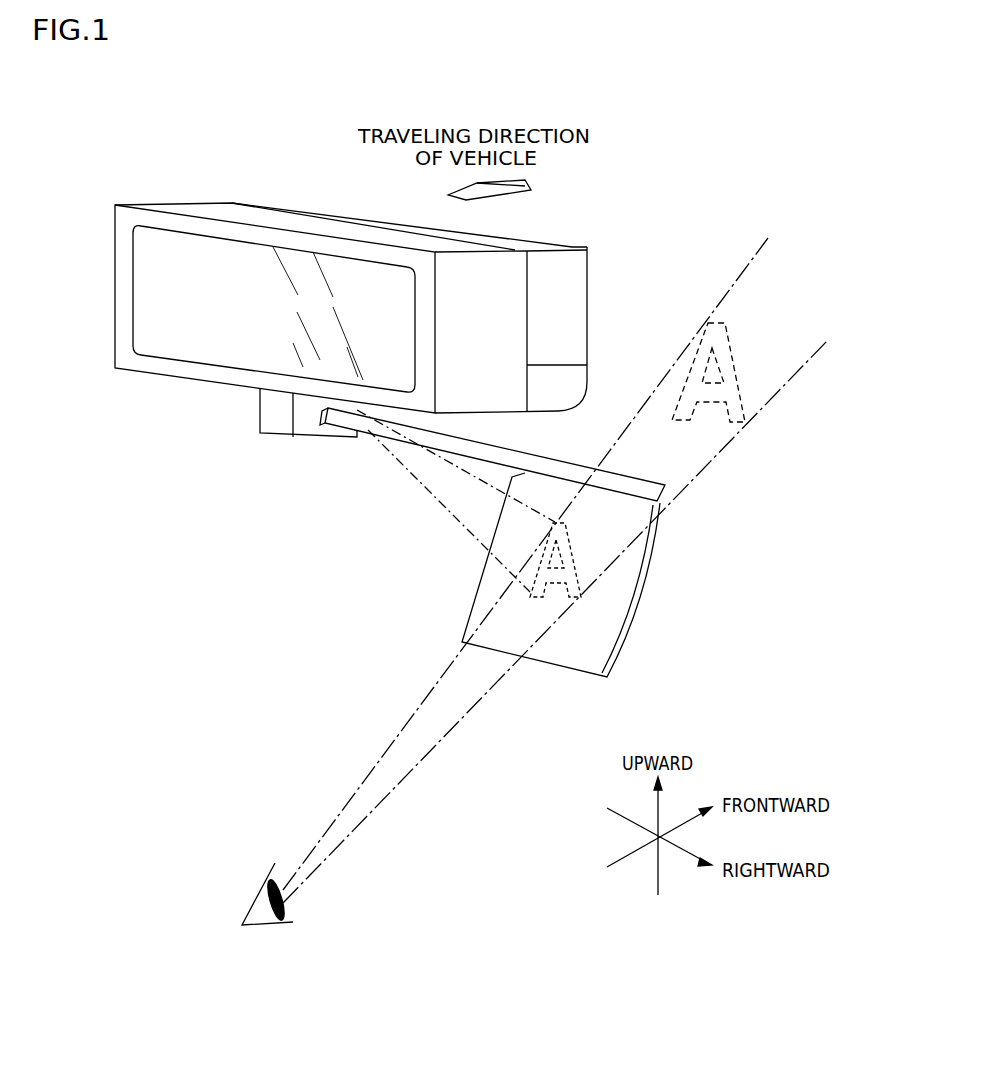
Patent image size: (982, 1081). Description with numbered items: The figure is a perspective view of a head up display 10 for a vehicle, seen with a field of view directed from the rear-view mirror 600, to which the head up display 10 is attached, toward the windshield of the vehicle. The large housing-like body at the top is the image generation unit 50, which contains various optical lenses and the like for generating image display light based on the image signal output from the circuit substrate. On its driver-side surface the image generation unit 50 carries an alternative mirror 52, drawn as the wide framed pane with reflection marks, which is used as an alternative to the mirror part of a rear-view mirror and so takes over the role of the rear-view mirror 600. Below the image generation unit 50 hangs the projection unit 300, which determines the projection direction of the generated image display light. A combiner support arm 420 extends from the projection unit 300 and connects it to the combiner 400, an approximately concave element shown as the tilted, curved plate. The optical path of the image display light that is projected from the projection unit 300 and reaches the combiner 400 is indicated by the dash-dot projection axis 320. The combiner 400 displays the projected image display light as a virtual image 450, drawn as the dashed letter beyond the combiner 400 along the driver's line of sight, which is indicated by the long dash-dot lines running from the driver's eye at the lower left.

The head up display 10 is at (138, 183).
The image generation unit 50 is at (125, 292).
The alternative mirror 52 is at (183, 348).
The rear-view mirror 600 is at (580, 293).
The projection unit 300 is at (283, 436).
The projection axis 320 is at (433, 503).
The combiner support arm 420 is at (568, 473).
The combiner 400 is at (614, 608).
The virtual image 450 is at (742, 395).